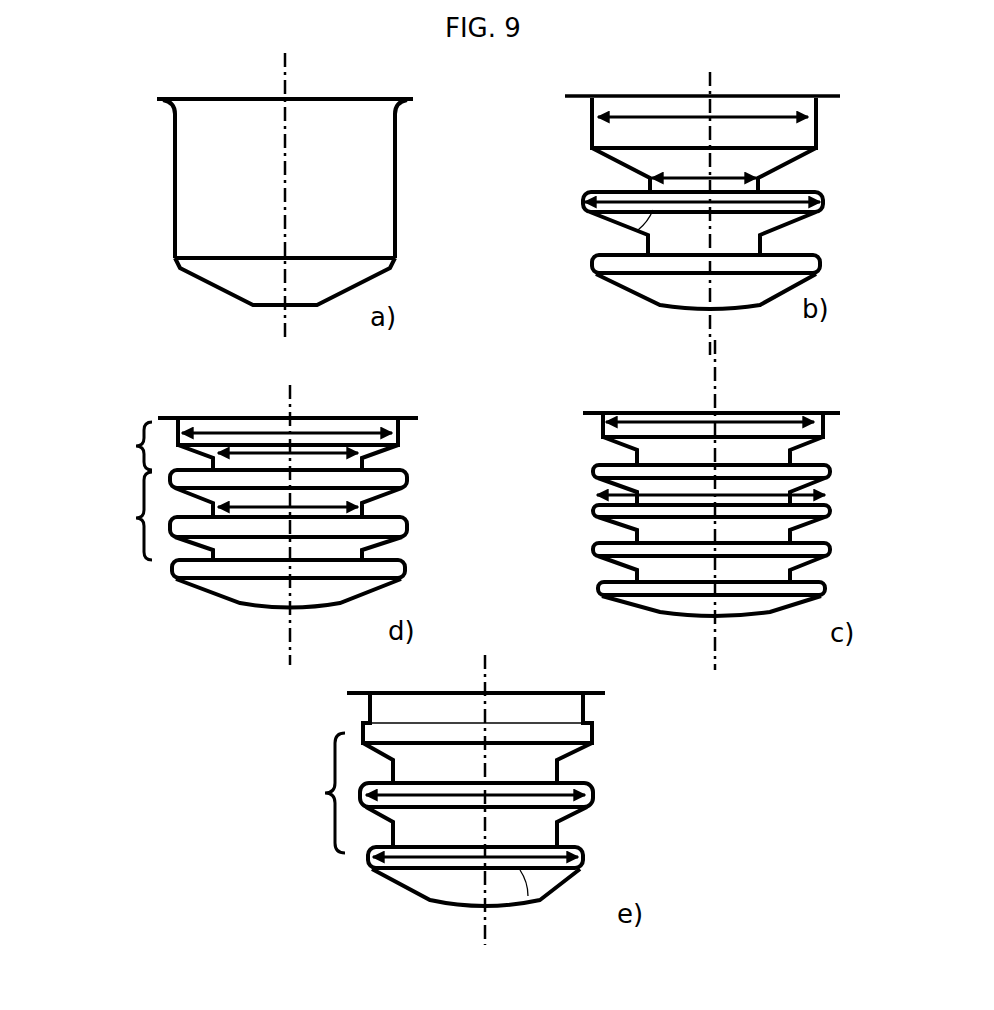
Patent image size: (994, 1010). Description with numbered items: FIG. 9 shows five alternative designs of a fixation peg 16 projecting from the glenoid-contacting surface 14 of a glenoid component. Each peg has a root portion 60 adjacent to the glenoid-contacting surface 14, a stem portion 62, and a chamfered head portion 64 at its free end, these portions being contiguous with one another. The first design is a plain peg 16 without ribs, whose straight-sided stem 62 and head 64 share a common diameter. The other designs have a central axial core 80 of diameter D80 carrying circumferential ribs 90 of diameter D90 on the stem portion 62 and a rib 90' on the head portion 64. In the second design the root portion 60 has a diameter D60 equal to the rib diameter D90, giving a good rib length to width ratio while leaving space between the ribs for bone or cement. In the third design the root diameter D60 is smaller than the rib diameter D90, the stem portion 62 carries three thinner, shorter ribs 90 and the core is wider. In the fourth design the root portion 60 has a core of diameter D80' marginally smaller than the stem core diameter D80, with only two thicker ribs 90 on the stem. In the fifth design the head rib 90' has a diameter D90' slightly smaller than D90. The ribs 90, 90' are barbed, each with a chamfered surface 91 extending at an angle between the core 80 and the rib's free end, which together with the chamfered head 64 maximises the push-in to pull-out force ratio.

The glenoid-contacting surface 14 is at (410, 103).
The peg 16 is at (168, 125).
The root portion 60 is at (622, 138).
The stem portion 62 is at (215, 200).
The head portion 64 is at (242, 278).
The central axial core 80 is at (681, 95).
The circumferential rib 90 is at (639, 519).
The rib on the head portion 90' is at (752, 575).
The chamfered surface 91 is at (610, 222).
The root portion diameter D60 is at (738, 115).
The core diameter D80 is at (572, 362).
The root core diameter D80' is at (308, 404).
The rib diameter D90 is at (638, 525).
The head rib diameter D90' is at (508, 910).